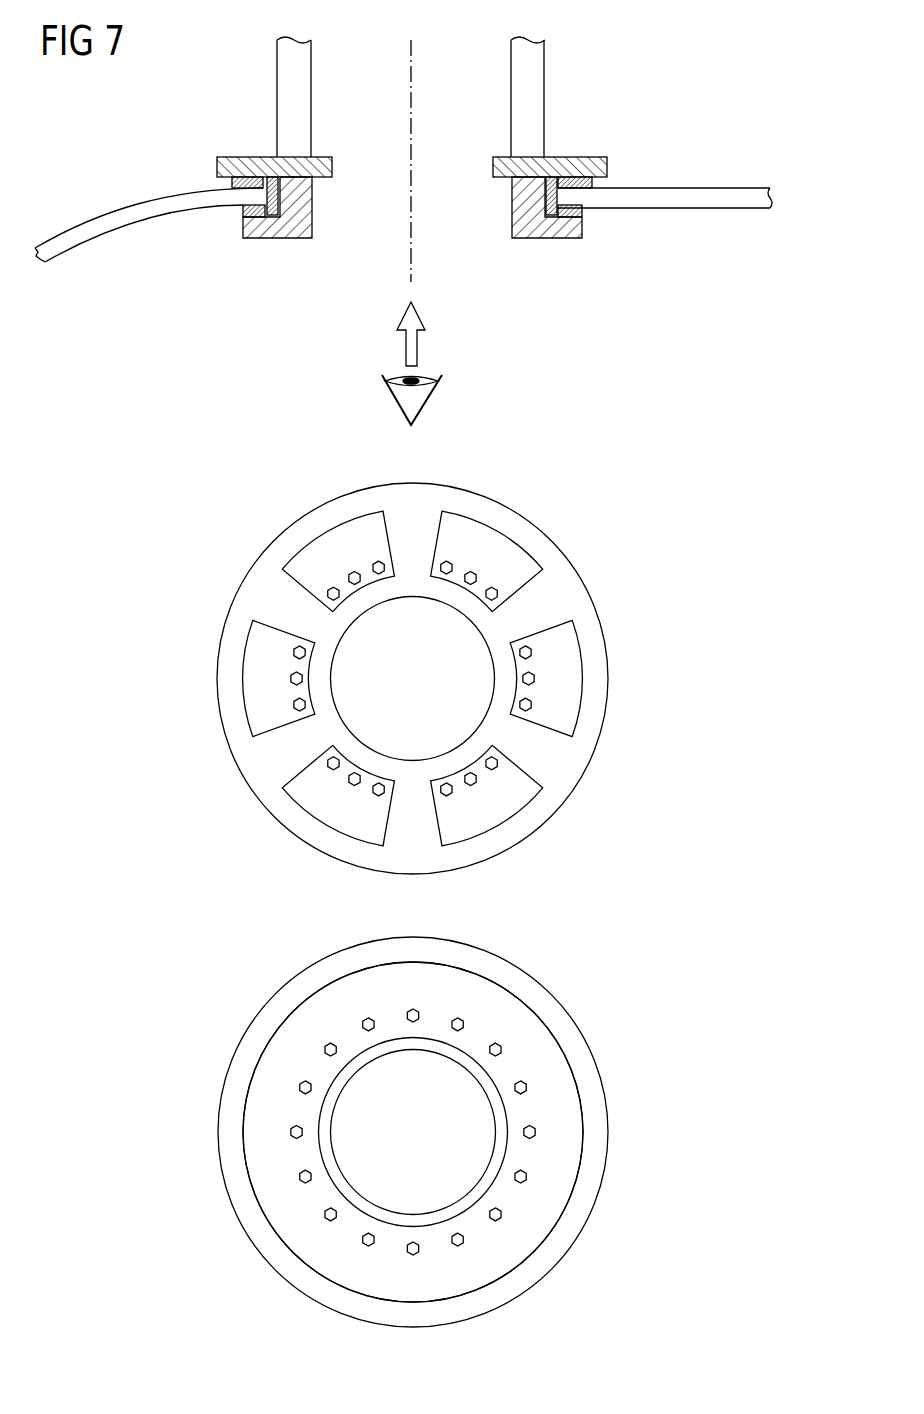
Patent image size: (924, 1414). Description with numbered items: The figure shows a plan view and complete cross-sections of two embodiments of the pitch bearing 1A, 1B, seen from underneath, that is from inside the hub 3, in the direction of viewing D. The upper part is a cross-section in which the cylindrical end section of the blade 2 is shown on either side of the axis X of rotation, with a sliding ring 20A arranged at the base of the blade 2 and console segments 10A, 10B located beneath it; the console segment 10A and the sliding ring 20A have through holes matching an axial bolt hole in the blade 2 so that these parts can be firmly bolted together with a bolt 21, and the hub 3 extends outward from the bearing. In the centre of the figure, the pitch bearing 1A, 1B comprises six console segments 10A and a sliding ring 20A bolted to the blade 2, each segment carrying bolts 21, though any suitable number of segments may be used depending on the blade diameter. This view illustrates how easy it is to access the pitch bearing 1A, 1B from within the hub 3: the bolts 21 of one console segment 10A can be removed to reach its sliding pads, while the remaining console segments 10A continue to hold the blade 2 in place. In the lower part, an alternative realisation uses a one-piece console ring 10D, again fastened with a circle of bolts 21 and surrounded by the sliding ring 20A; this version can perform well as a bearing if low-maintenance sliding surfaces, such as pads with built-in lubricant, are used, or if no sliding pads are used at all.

The blade 2 is at (540, 79).
The hub 3 is at (107, 220).
The sliding ring 20A is at (220, 166).
The console segment 10A is at (428, 511).
The distributor segment 10B is at (288, 230).
The one-piece console ring 10D is at (530, 1222).
The bolt 21 is at (533, 680).
The pitch bearing 1A is at (467, 838).
The pitch bearing 1B is at (546, 508).
The axis of rotation X is at (410, 117).
The direction of viewing D is at (415, 348).